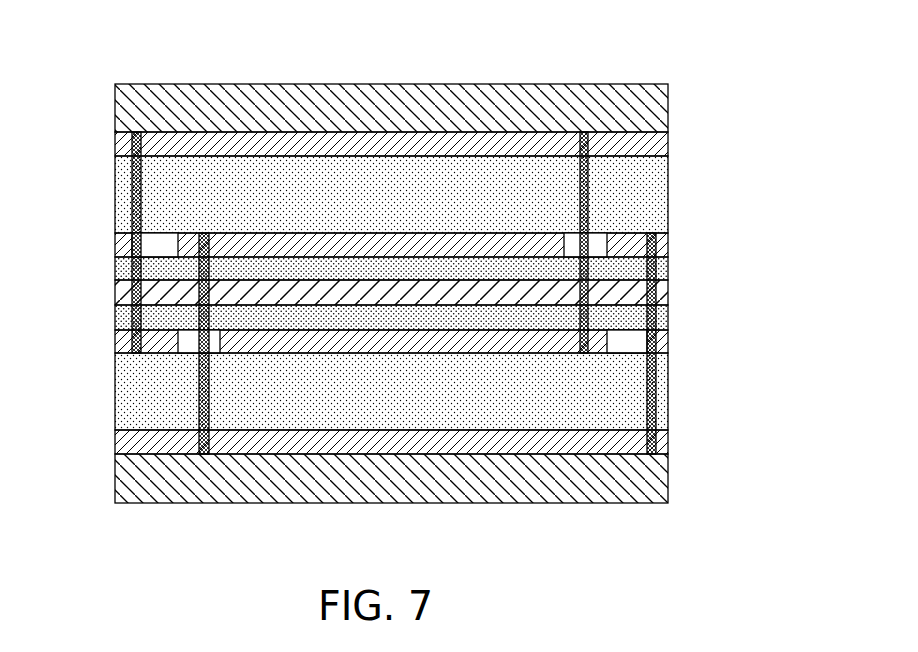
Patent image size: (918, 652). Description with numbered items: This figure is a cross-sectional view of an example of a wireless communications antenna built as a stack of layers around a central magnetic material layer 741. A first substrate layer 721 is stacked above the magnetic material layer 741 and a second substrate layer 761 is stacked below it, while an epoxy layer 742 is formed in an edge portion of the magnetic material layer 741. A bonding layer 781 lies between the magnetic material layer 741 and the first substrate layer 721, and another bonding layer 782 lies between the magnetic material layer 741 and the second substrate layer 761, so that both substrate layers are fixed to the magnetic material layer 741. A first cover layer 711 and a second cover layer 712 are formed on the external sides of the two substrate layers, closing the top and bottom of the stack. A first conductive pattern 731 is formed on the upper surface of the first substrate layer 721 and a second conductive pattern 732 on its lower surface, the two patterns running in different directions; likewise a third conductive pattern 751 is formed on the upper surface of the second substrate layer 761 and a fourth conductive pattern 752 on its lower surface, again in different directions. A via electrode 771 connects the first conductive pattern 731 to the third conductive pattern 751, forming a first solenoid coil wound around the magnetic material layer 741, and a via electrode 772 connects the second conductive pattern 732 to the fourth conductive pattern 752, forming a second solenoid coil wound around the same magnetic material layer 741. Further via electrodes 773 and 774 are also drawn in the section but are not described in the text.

The first cover layer 711 is at (668, 106).
The second cover layer 712 is at (668, 487).
The first substrate layer 721 is at (668, 197).
The first conductive pattern 731 is at (668, 142).
The second conductive pattern 732 is at (668, 243).
The magnetic material layer 741 is at (200, 289).
The epoxy layer 742 is at (668, 285).
The third conductive pattern 751 is at (607, 336).
The fourth conductive pattern 752 is at (668, 441).
The second substrate layer 761 is at (668, 395).
The via electrode 771 is at (133, 177).
The via electrode 772 is at (197, 383).
The third via 773 is at (577, 84).
The fourth via 774 is at (648, 440).
The bonding layer 781 is at (397, 270).
The bonding layer 782 is at (382, 308).